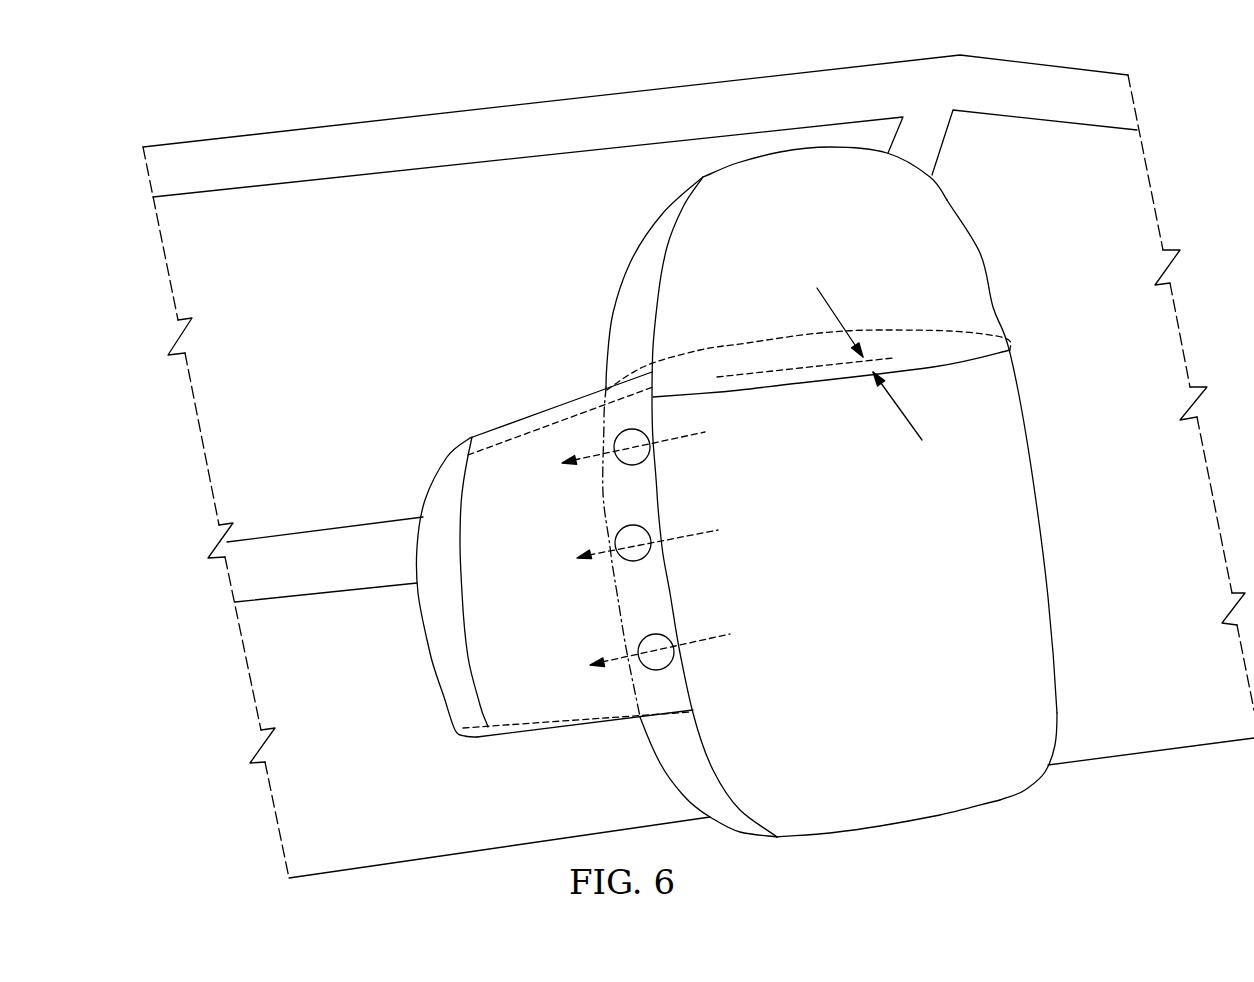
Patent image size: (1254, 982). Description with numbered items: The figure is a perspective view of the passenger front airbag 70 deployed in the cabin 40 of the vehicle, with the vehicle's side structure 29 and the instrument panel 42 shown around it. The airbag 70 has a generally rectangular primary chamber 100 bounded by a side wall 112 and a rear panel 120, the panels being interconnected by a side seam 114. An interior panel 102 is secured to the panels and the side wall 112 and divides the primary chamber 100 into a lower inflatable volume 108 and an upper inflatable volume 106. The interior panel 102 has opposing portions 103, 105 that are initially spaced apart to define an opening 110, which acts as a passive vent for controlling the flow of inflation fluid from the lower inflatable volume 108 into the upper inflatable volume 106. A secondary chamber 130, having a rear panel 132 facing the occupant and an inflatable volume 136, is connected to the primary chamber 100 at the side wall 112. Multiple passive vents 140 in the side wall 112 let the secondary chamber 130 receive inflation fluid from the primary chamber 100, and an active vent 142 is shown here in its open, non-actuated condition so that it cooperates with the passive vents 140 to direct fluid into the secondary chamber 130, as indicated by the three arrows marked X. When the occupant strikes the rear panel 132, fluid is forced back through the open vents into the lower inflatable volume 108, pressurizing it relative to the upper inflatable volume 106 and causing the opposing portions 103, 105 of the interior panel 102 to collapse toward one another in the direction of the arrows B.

The side structure 29 is at (1113, 100).
The cabin 40 is at (213, 271).
The instrument panel 42 is at (330, 553).
The passenger front airbag 70 is at (1010, 248).
The primary chamber 100 is at (714, 459).
The interior panel 102 is at (960, 355).
The opposing portion 103 is at (797, 377).
The opposing portion 105 is at (763, 360).
The upper inflatable volume 106 is at (917, 238).
The lower inflatable volume 108 is at (975, 760).
The opening 110 is at (808, 367).
The side wall 112 is at (677, 755).
The side seam 114 is at (720, 790).
The rear panel 120 is at (855, 810).
The secondary chamber 130 is at (490, 478).
The rear panel 132 is at (481, 560).
The inflatable volume 136 is at (497, 645).
The passive vent 140 is at (655, 442).
The active vent 142 is at (657, 540).
The arrows B is at (900, 403).